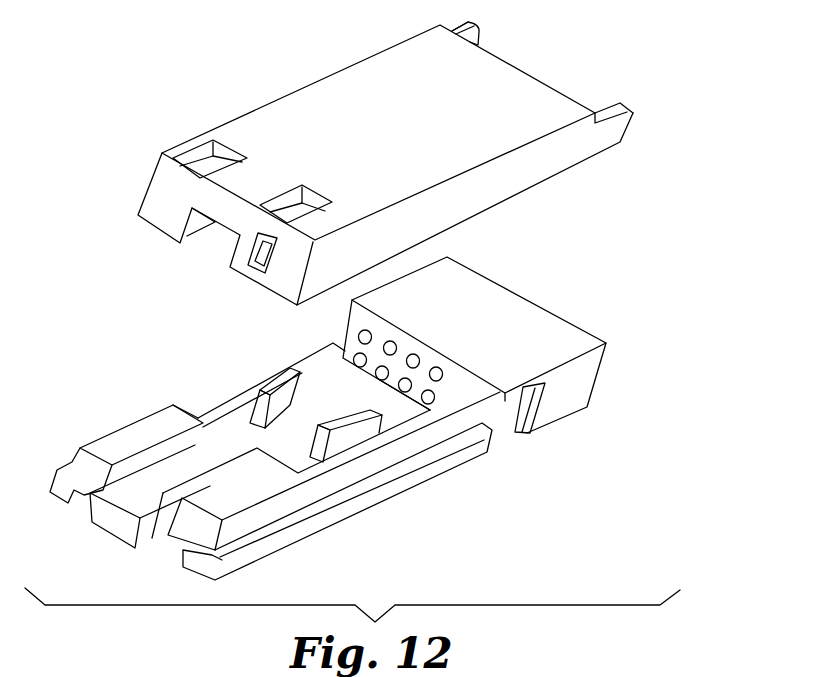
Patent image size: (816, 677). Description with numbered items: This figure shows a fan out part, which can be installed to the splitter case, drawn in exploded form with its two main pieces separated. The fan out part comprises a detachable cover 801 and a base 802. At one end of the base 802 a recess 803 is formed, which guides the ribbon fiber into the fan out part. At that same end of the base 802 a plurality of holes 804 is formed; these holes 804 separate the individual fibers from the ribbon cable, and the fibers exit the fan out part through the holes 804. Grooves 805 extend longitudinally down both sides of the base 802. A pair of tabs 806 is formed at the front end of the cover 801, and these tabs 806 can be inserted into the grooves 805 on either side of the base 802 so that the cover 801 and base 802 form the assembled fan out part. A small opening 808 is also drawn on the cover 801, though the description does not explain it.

The cover 801 is at (570, 152).
The base 802 is at (570, 403).
The recess 803 is at (128, 498).
The holes 804 is at (362, 337).
The grooves 805 is at (502, 418).
The tabs 806 is at (632, 120).
The slot opening 808 is at (263, 262).